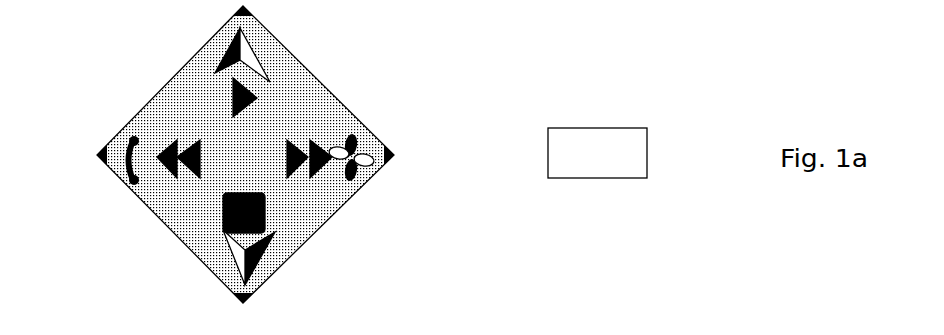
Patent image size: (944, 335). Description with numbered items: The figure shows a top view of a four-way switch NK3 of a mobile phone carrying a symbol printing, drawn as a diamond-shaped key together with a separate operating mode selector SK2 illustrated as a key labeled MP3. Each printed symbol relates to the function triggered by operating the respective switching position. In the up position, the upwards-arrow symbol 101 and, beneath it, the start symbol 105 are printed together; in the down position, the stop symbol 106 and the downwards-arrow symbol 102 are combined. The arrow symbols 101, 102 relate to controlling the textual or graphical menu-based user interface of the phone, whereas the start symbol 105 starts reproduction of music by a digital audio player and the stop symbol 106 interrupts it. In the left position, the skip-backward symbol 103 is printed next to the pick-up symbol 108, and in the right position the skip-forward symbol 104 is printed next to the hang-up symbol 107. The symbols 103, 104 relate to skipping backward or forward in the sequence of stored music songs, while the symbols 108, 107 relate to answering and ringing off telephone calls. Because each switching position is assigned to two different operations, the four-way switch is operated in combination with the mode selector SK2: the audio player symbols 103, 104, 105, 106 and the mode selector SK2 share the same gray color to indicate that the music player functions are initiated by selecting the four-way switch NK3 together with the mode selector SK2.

The navigation key NK3 is at (332, 72).
The mode selector SK2 is at (601, 123).
The symbol 101 is at (217, 46).
The symbol 102 is at (219, 264).
The symbol 103 is at (169, 184).
The symbol 104 is at (314, 184).
The symbol 105 is at (222, 87).
The symbol 106 is at (219, 226).
The symbol 107 is at (372, 155).
The symbol 108 is at (113, 155).